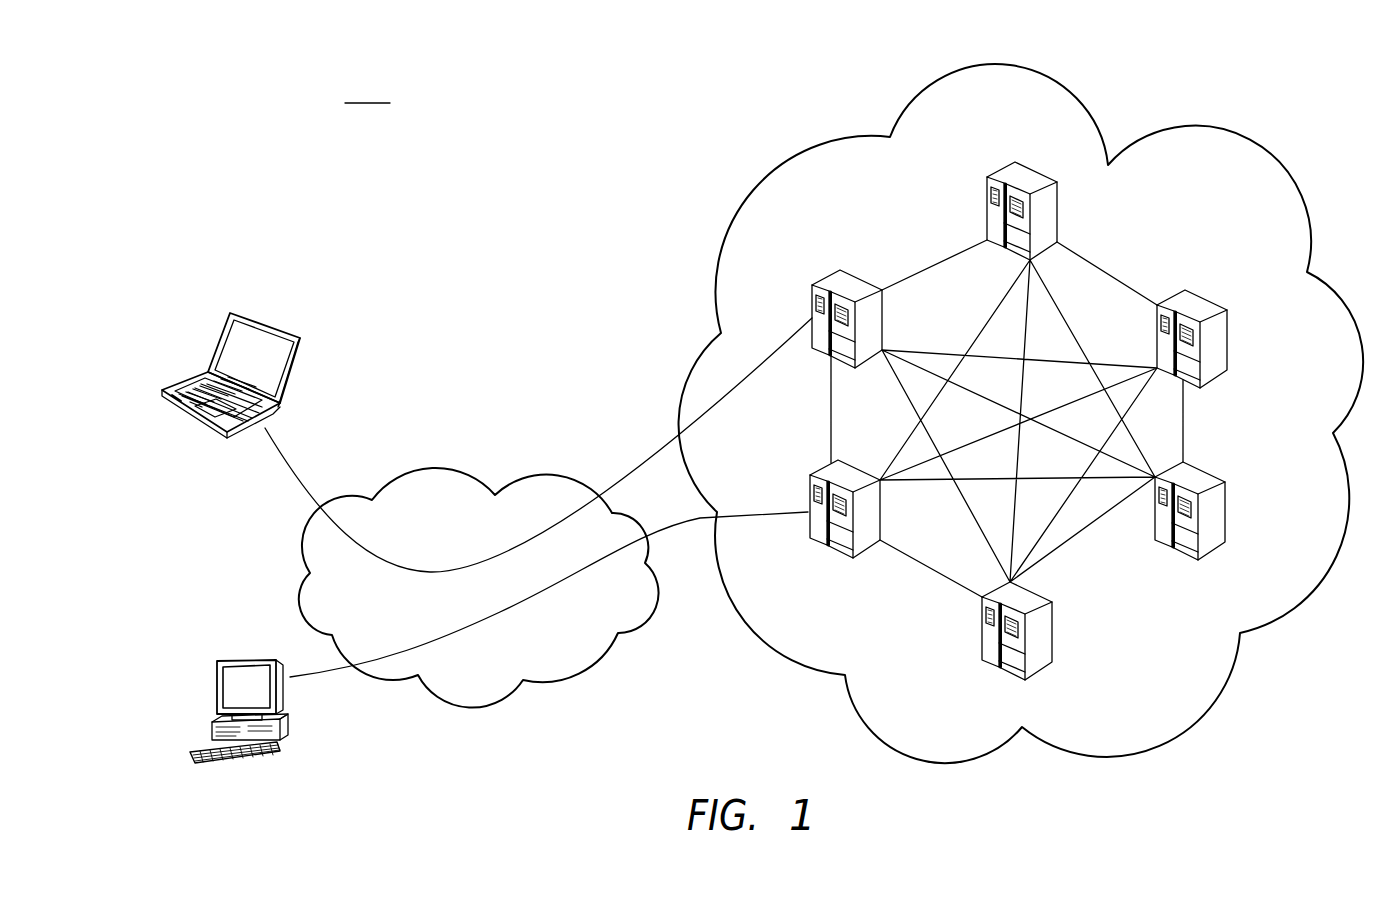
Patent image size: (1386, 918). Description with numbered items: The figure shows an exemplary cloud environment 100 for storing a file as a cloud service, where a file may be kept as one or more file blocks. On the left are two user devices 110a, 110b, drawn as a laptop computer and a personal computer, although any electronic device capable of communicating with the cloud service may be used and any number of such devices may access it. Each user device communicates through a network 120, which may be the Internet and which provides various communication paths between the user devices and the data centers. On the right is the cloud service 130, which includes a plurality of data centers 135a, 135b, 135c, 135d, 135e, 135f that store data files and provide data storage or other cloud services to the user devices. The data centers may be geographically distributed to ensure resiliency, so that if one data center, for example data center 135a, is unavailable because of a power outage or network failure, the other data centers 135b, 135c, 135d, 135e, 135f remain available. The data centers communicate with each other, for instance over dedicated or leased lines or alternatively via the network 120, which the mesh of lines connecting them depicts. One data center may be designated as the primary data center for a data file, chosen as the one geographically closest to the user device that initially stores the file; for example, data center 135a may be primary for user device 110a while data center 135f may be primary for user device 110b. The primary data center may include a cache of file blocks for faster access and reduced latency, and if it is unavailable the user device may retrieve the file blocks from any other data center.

The cloud environment 100 is at (367, 90).
The user device 110a is at (219, 347).
The user device 110b is at (219, 686).
The network 120 is at (439, 465).
The cloud service 130 is at (757, 193).
The data center 135a is at (825, 283).
The data center 135b is at (986, 210).
The data center 135c is at (1227, 345).
The data center 135d is at (1227, 517).
The data center 135e is at (1054, 634).
The data center 135f is at (823, 470).